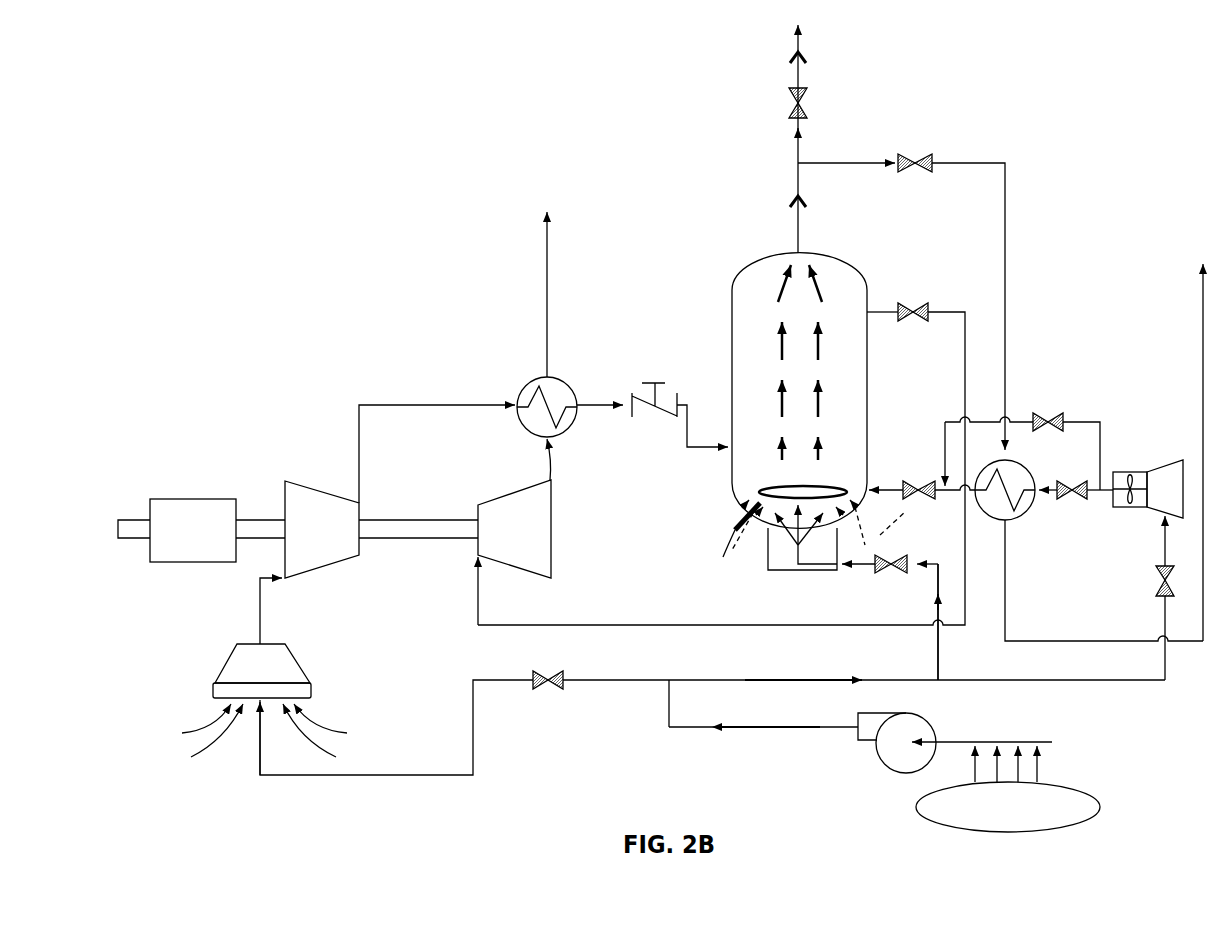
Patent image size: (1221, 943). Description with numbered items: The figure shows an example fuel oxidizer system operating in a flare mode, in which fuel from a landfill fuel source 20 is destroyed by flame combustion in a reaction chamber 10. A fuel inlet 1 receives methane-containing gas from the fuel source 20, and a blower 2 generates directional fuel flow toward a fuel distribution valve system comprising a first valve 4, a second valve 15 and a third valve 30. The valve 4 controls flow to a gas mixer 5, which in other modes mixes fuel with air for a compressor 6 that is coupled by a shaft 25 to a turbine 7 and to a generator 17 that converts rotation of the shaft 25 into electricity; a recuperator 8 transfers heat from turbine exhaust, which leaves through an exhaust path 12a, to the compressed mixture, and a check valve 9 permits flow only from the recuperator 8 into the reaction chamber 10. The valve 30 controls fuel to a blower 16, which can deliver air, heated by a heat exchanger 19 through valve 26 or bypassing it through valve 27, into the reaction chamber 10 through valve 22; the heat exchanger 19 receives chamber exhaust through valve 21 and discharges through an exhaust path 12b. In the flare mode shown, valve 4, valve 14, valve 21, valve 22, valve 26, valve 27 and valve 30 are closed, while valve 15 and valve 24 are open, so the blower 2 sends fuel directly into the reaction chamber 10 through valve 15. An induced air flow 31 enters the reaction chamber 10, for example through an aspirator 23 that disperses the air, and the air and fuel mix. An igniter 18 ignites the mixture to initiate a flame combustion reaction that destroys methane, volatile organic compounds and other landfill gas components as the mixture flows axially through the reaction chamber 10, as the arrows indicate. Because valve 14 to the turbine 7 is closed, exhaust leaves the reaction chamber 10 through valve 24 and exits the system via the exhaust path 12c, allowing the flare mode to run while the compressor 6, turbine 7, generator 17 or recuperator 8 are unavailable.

The fuel inlet 1 is at (1037, 770).
The blower 2 is at (900, 716).
The first valve 4 is at (560, 687).
The gas mixer 5 is at (225, 662).
The compressor 6 is at (318, 476).
The turbine 7 is at (558, 529).
The recuperator 8 is at (540, 378).
The check valve 9 is at (655, 385).
The reaction chamber 10 is at (730, 330).
The exhaust path 12a is at (545, 243).
The exhaust path 12b is at (1200, 313).
The exhaust path 12c is at (800, 148).
The valve 14 is at (922, 305).
The second valve 15 is at (880, 569).
The blower 16 is at (1165, 462).
The generator 17 is at (197, 498).
The igniter 18 is at (737, 545).
The heat exchanger 19 is at (1010, 521).
The fuel source 20 is at (1008, 807).
The valve 21 is at (920, 172).
The valve 22 is at (930, 486).
The aspirator 23 is at (745, 492).
The valve 24 is at (790, 90).
The shaft 25 is at (402, 520).
The valve 26 is at (1080, 506).
The valve 27 is at (1055, 416).
The third valve 30 is at (1155, 581).
The induced air flow 31 is at (722, 537).